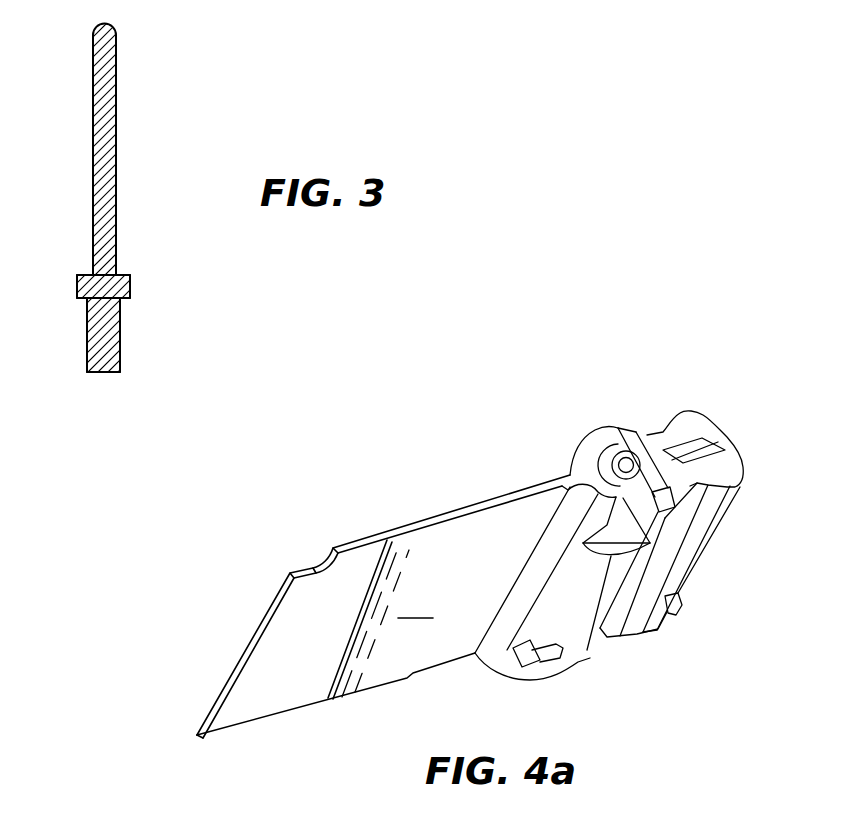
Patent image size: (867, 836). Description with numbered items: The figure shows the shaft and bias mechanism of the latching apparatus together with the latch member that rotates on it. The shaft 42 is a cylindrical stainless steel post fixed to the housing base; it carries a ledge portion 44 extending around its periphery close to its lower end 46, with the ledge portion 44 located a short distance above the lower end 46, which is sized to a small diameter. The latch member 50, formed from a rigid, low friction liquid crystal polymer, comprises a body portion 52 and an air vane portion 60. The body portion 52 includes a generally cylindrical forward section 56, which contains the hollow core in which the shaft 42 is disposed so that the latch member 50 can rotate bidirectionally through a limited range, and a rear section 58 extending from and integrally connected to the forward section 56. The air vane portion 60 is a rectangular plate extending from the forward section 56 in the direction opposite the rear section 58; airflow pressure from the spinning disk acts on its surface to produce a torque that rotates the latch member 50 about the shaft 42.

In FIG. 3, the shaft 42 is at (150, 73).
In FIG. 3, the ledge portion 44 is at (131, 280).
In FIG. 3, the lower end 46 is at (86, 330).
In FIG. 4a, the latch member 50 is at (383, 590).
In FIG. 4a, the body portion 52 is at (704, 558).
In FIG. 4a, the forward section 56 is at (599, 438).
In FIG. 4a, the rear section 58 is at (707, 417).
In FIG. 4a, the air vane portion 60 is at (417, 603).